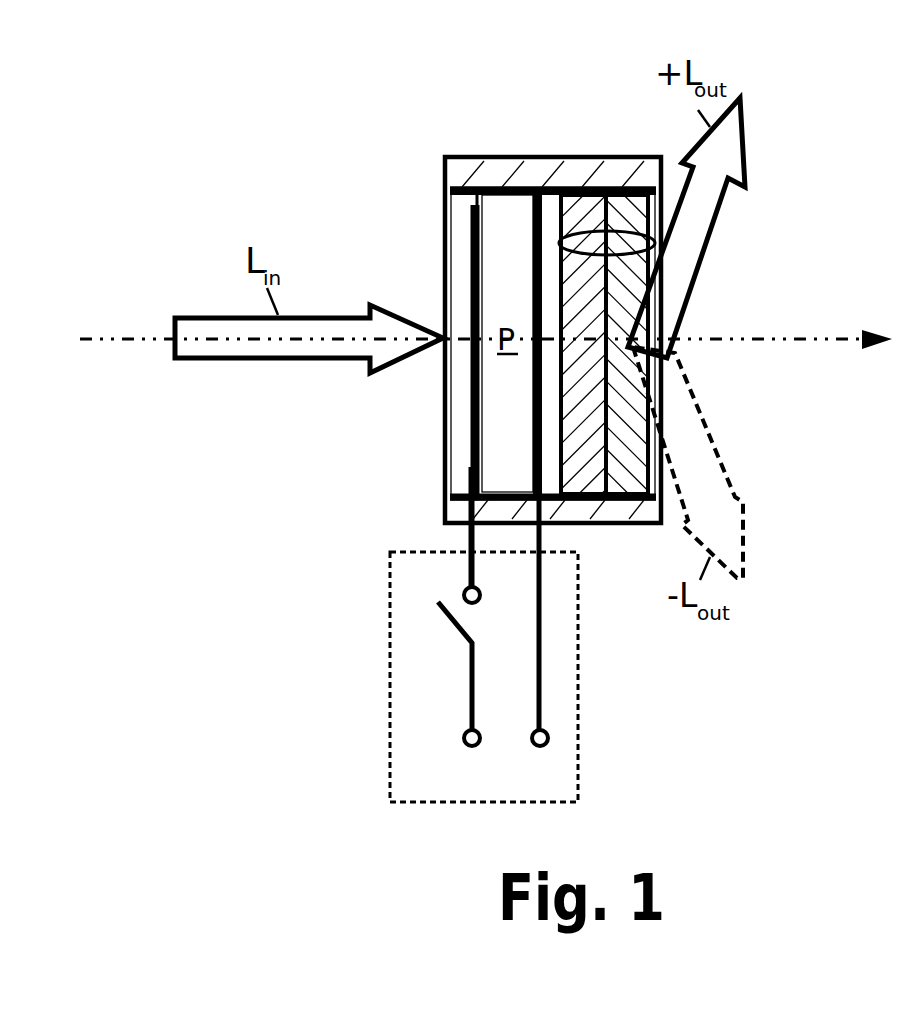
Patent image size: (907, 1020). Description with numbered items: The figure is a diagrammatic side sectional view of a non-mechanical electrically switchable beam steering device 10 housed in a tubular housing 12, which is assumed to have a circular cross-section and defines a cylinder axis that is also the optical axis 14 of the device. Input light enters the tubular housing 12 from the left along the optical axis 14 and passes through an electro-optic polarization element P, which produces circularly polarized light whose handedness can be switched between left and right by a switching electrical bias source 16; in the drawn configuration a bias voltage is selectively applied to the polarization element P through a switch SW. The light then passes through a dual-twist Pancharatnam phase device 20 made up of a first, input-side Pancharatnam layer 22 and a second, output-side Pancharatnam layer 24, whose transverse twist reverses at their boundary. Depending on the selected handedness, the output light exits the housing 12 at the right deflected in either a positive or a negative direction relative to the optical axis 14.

The beam steering device 10 is at (321, 73).
The tubular housing 12 is at (603, 525).
The optical axis 14 is at (785, 337).
The switching electrical bias source 16 is at (390, 683).
The dual-twist Pancharatnam phase device 20 is at (562, 247).
The first Pancharatnam layer 22 is at (580, 205).
The second Pancharatnam layer 24 is at (628, 207).